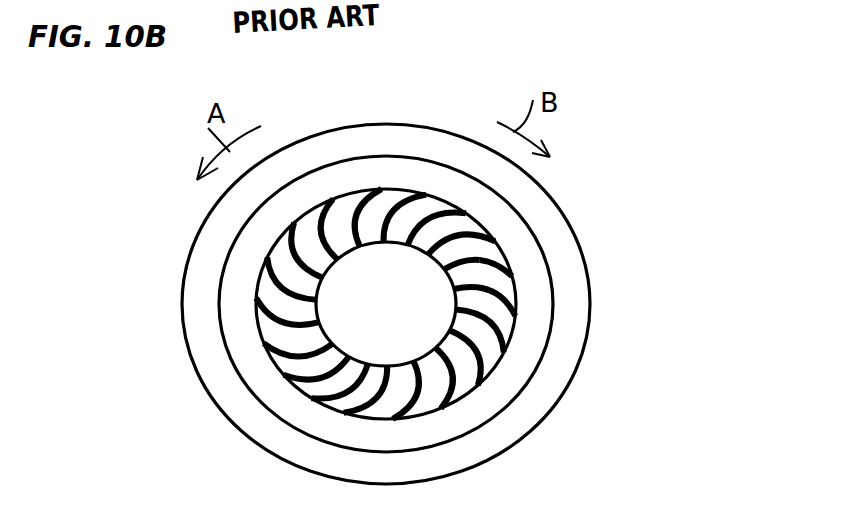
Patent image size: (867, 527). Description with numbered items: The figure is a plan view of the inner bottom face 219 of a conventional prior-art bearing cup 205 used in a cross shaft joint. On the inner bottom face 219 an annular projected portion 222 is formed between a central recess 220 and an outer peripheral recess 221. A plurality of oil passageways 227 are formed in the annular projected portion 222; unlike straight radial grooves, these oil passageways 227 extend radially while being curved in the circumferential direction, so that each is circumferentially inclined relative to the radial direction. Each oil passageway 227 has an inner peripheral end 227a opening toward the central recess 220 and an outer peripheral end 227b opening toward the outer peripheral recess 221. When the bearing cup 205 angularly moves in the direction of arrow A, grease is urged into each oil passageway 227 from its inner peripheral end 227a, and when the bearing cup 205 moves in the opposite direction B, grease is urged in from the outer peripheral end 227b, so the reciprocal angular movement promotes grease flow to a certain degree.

The bearing cup 205 is at (486, 290).
The inner bottom face 219 is at (506, 222).
The central recess 220 is at (400, 333).
The outer peripheral recess 221 is at (523, 351).
The annular projected portion 222 is at (490, 352).
The oil passageways 227 is at (513, 310).
The inner peripheral end 227a is at (442, 261).
The outer peripheral end 227b is at (510, 263).